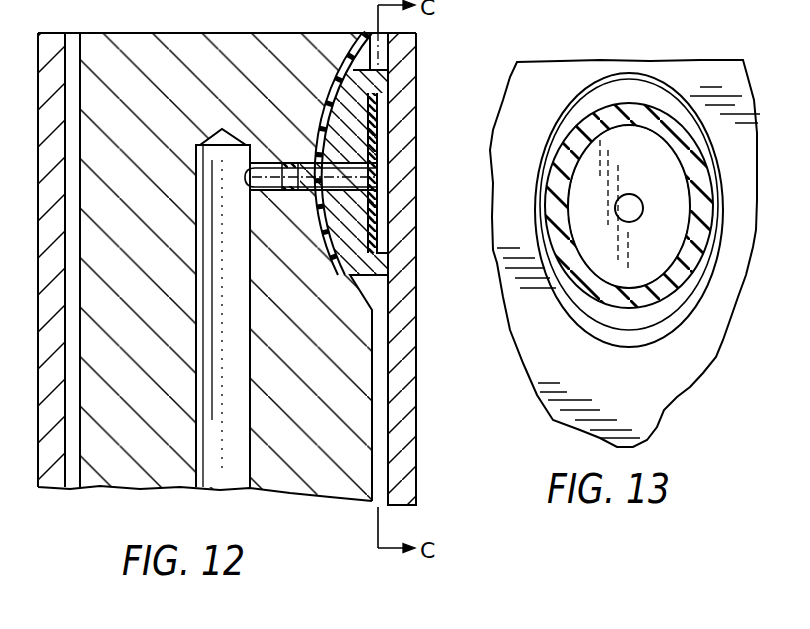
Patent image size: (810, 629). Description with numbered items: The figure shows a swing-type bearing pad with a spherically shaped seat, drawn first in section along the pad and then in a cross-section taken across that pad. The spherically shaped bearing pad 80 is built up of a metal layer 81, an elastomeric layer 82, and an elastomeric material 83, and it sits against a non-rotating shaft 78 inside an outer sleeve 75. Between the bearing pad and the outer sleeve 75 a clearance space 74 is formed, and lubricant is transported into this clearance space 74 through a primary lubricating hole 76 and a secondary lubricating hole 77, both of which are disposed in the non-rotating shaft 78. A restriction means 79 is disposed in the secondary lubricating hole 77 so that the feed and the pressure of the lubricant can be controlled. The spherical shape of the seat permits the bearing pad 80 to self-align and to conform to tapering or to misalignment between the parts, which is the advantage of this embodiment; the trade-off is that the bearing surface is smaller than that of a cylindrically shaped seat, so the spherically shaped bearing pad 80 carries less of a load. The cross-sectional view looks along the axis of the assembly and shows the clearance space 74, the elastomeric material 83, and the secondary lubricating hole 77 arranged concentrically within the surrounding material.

In FIG. 12, the clearance space 74 is at (388, 158).
In FIG. 13, the clearance space 74 is at (660, 180).
In FIG. 12, the outer sleeve 75 is at (400, 306).
In FIG. 12, the primary lubricating hole 76 is at (203, 198).
In FIG. 12, the secondary lubricating hole 77 is at (264, 188).
In FIG. 13, the secondary lubricating hole 77 is at (628, 212).
In FIG. 12, the non-rotating shaft 78 is at (140, 289).
In FIG. 12, the restriction means 79 is at (292, 191).
In FIG. 12, the spherically shaped bearing pad 80 is at (328, 92).
In FIG. 12, the metal layer 81 is at (366, 142).
In FIG. 12, the elastomeric layer 82 is at (321, 130).
In FIG. 12, the elastomeric material 83 is at (398, 83).
In FIG. 13, the elastomeric material 83 is at (699, 182).